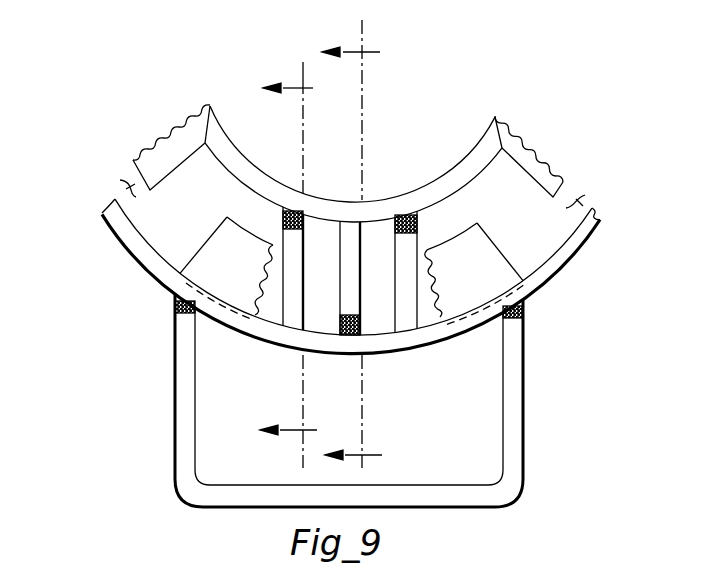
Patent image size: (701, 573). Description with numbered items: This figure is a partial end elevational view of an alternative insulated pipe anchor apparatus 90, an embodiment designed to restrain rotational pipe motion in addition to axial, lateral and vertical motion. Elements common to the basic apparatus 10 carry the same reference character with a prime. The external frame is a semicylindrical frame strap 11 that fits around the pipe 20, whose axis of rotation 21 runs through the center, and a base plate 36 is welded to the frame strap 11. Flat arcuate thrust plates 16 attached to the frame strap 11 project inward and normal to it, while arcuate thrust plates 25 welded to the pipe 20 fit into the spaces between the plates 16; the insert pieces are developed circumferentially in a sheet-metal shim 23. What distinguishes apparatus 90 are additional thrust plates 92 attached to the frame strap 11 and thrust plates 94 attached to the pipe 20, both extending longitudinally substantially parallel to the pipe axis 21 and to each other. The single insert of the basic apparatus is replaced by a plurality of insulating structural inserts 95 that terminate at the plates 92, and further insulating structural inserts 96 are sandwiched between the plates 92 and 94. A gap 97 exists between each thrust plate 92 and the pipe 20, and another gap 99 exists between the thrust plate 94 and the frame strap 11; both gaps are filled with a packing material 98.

The frame strap 11 is at (361, 276).
The pipe 20 is at (353, 164).
The thrust plate 25 is at (353, 150).
The shim 23 is at (90, 207).
The insulating structural insert 95 is at (351, 186).
The thrust plate 16 is at (351, 267).
The thrust plate 92 is at (293, 321).
The thrust plate 94 is at (350, 232).
The insulating structural insert 96 is at (336, 305).
The gap 97 is at (303, 223).
The packing material 98 is at (290, 208).
The gap 99 is at (368, 332).
The base plate 36 is at (365, 400).
The insulated pipe anchor apparatus (alternative embodiment) 90 is at (546, 304).
The insulated pipe anchor apparatus 10 is at (355, 251).
The pipe axis 21 is at (338, 33).